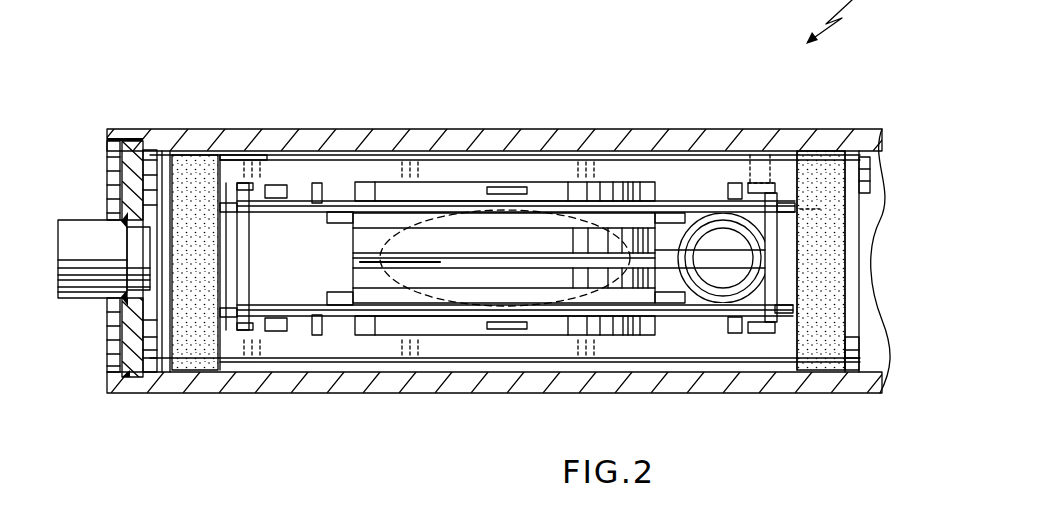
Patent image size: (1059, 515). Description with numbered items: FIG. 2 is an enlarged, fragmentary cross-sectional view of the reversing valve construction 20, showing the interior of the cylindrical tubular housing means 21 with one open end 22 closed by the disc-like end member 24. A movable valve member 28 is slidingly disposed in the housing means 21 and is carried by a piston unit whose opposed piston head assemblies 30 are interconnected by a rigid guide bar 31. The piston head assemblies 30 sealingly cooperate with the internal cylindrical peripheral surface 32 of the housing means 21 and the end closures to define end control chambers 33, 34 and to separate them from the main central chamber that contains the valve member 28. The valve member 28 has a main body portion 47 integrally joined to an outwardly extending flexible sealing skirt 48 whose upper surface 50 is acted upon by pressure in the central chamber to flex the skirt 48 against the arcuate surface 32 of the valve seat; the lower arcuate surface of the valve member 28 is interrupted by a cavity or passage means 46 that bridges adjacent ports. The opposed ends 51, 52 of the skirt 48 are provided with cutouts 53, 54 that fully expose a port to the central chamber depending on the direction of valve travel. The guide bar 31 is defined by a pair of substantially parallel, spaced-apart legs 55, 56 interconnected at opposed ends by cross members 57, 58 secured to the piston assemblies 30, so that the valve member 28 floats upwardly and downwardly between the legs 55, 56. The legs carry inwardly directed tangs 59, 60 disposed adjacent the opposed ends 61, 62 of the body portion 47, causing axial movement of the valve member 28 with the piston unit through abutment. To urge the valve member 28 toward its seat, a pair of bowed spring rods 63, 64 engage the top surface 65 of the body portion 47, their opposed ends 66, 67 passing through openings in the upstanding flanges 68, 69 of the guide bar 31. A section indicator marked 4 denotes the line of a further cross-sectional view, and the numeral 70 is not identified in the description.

The reversing valve construction 20 is at (847, 22).
The tubular housing means 21 is at (635, 129).
The open end 22 is at (113, 143).
The end member 24 is at (133, 184).
The movable valve member 28 is at (435, 216).
The piston head assemblies 30 is at (143, 338).
The guide member or bar 31 is at (550, 167).
The internal cylindrical peripheral surface 32 is at (867, 370).
The end control chamber 33 is at (152, 158).
The end control chamber 34 is at (868, 193).
The cavity or passage means 46 is at (452, 302).
The main body portion 47 is at (402, 192).
The flexible sealing skirt 48 is at (293, 156).
The upper surface of flexible skirt 50 is at (335, 241).
The end of flexible skirt 51 is at (262, 190).
The end of flexible skirt 52 is at (772, 130).
The cutout 53 is at (330, 287).
The cutout 54 is at (700, 268).
The leg of guide bar 55 is at (473, 167).
The leg of guide bar 56 is at (550, 348).
The cross member 57 is at (222, 276).
The cross member 58 is at (792, 248).
The tang 59 is at (330, 213).
The tang 60 is at (716, 230).
The end of body portion 61 is at (353, 274).
The end of body portion 62 is at (708, 296).
The spring rod 63 is at (672, 203).
The spring rod 64 is at (671, 315).
The top surface of body portion 65 is at (533, 192).
The end of spring rods 66 is at (231, 158).
The end of spring rods 67 is at (790, 200).
The upstanding flange 68 is at (238, 243).
The upstanding flange 69 is at (776, 278).
The drive rod 70 is at (555, 240).
The section line 4- 4 is at (507, 120).